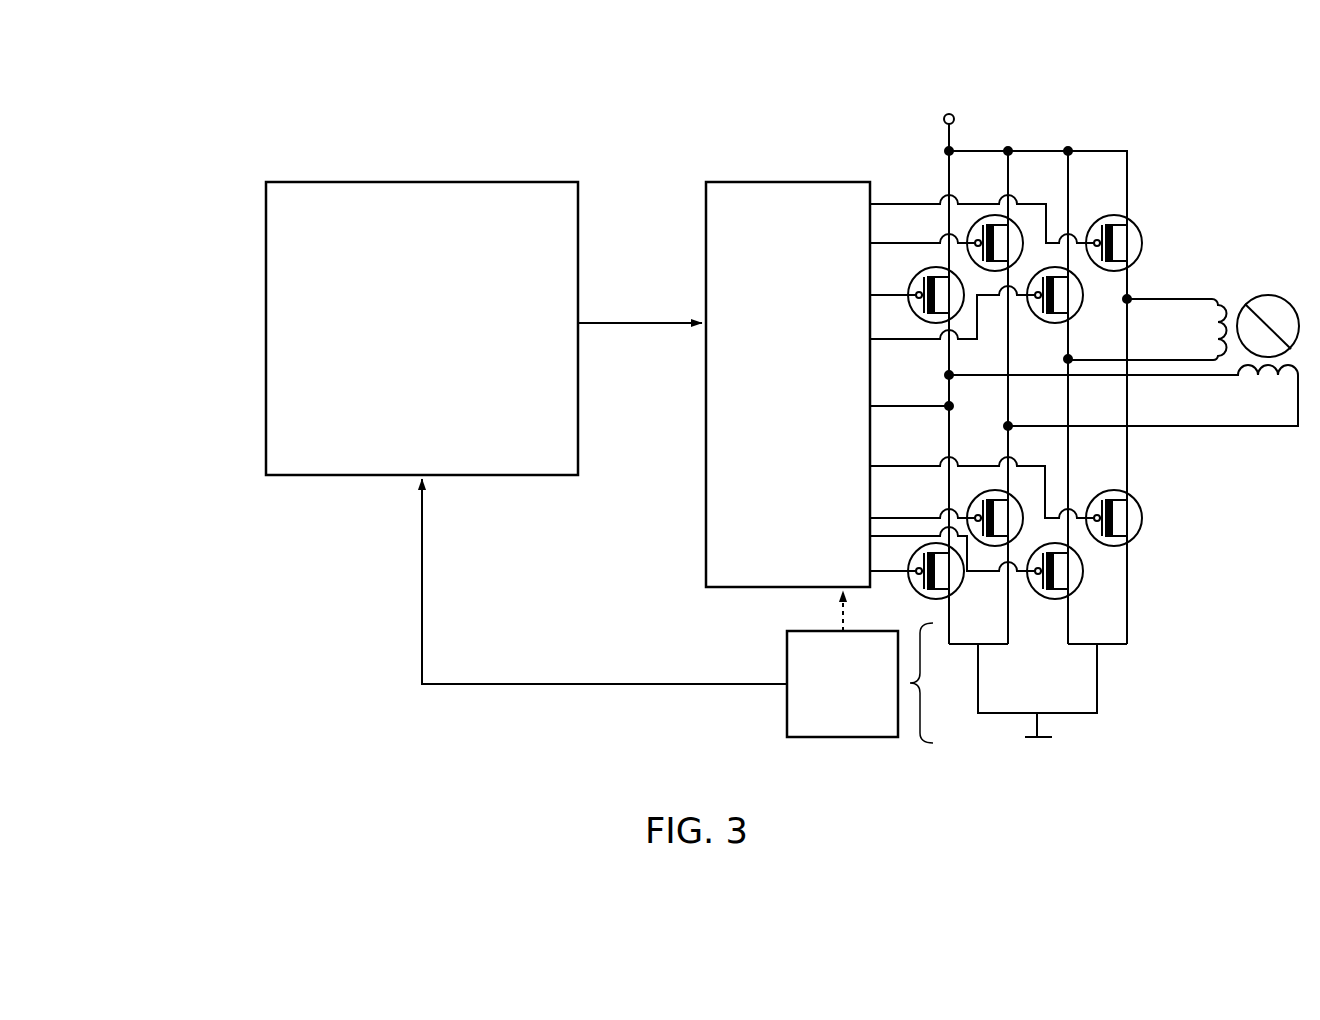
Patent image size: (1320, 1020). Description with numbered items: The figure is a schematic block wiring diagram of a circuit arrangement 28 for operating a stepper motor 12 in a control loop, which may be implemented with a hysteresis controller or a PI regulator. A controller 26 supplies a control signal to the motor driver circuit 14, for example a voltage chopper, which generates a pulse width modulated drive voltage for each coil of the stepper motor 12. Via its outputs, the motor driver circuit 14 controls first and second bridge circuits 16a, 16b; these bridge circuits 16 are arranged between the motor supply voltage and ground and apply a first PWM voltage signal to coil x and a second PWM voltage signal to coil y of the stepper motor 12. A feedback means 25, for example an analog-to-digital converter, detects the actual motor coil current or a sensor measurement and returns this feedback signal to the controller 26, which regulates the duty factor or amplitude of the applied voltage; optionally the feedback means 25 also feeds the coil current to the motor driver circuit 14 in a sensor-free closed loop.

The circuit arrangement 28 is at (172, 79).
The controller 26 is at (424, 181).
The motor driver circuit 14 is at (790, 181).
The feedback means 25 is at (842, 738).
The bridge circuits 16 is at (1017, 110).
The first bridge circuit 16a is at (922, 149).
The second bridge circuit 16b is at (1110, 136).
The stepper motor 12 is at (1237, 215).